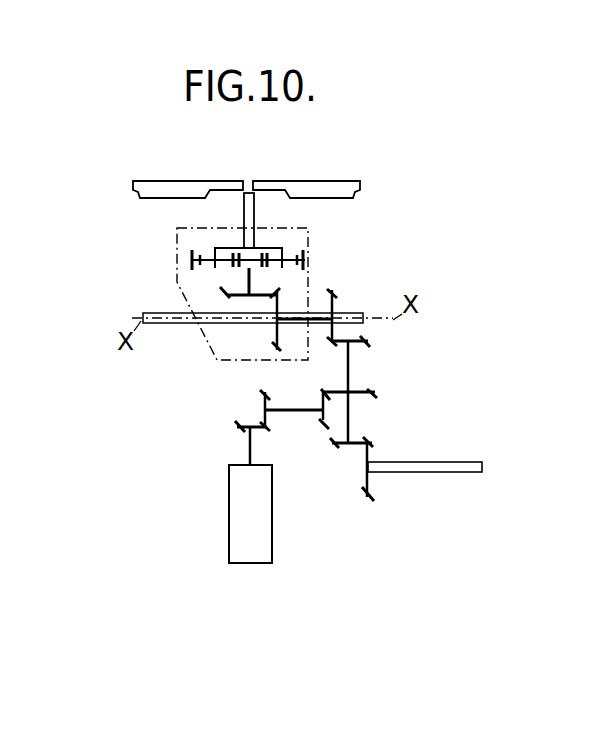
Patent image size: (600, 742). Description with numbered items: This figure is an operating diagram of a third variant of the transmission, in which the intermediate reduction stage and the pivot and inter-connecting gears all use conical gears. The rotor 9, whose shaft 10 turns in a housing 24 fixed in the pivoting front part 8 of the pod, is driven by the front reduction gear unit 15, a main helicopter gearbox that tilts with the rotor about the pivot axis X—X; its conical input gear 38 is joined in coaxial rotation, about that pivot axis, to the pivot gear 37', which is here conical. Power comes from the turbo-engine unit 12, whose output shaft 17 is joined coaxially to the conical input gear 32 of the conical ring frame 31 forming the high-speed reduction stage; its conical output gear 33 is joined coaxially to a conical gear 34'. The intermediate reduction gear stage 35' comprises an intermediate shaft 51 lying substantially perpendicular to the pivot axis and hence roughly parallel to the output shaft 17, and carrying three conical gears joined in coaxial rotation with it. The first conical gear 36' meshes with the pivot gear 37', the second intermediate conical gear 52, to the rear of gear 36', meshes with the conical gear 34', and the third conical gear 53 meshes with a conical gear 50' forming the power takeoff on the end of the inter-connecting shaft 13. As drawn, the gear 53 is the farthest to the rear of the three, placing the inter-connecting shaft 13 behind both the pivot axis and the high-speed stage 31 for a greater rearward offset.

The pivoting front part 8 is at (183, 291).
The housing 24 is at (176, 243).
The rotor 9 is at (281, 177).
The shaft 10 is at (247, 213).
The front reduction gear unit 15 is at (210, 280).
The conical input gear 38 is at (275, 343).
The pivot gear 37' is at (359, 299).
The first conical gear 36' is at (389, 343).
The intermediate shaft 51 is at (348, 372).
The intermediate reduction gear stage 35' is at (406, 390).
The second intermediate conical gear 52 is at (371, 396).
The conical gear 34' is at (311, 429).
The conical ring frame 31 is at (250, 410).
The conical output gear 33 is at (265, 395).
The conical input gear 32 is at (245, 426).
The output shaft 17 is at (248, 448).
The turbo-engine unit 12 is at (260, 526).
The third conical gear 53 is at (338, 450).
The conical gear 50' is at (384, 493).
The inter-connecting shaft 13 is at (445, 462).